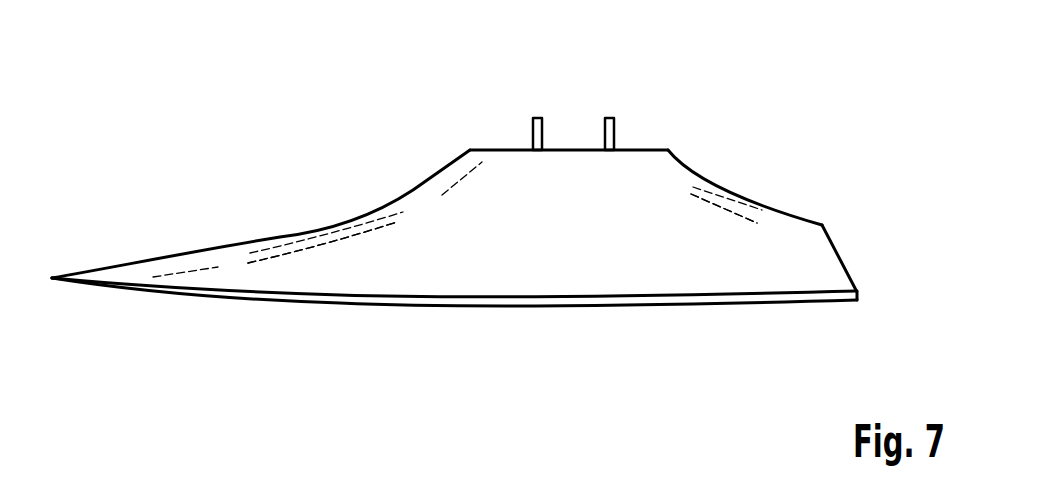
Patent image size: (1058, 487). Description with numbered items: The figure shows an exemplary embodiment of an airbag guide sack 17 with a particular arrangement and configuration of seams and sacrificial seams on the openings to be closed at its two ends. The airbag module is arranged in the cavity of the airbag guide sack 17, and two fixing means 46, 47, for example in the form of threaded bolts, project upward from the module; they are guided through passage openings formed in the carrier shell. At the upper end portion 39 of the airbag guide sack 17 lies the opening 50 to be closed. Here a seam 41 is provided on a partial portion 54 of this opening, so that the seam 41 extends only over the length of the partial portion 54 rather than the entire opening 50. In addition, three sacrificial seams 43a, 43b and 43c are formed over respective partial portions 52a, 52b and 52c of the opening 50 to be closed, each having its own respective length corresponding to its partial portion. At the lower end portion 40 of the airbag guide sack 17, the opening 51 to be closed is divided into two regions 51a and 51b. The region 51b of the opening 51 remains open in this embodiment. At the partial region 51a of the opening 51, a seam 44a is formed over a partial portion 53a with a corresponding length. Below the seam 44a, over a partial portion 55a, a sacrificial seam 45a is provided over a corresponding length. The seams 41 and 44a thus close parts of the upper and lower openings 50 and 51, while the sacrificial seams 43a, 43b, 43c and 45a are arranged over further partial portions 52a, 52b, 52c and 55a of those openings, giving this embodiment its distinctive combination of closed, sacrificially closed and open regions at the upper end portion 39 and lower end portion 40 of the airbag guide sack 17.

The airbag guide sack 17 is at (486, 188).
The upper end portion 39 is at (261, 214).
The opening to be closed 50 is at (277, 237).
The seam 41 is at (342, 181).
The partial portion 54 is at (360, 226).
The fixing means 46 is at (538, 118).
The fixing means 47 is at (610, 118).
The lower end portion 40 is at (772, 151).
The opening to be closed 51 is at (772, 151).
The region of the opening 51a is at (708, 177).
The region of the opening 51b is at (845, 265).
The seam 44a is at (806, 140).
The partial portion 53a is at (740, 193).
The sacrificial seam 43a is at (179, 317).
The partial portion 52a is at (192, 273).
The sacrificial seam 43b is at (357, 323).
The partial portion 52b is at (380, 228).
The sacrificial seam 43c is at (561, 208).
The partial portion 52c is at (460, 178).
The sacrificial seam 45a is at (737, 281).
The partial portion 55a is at (722, 212).